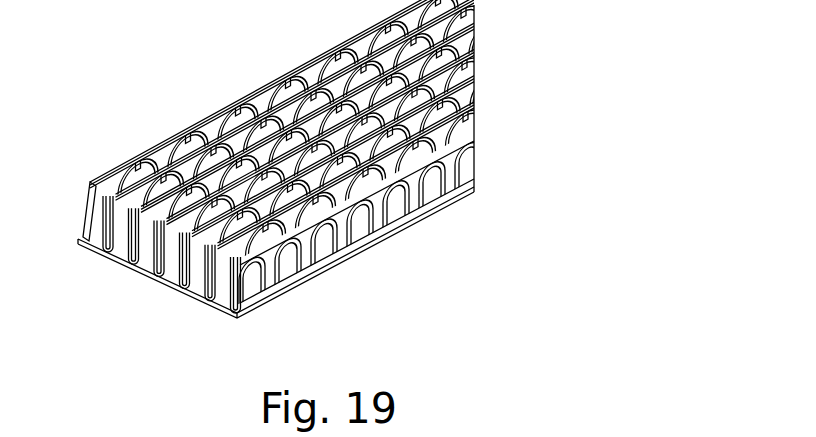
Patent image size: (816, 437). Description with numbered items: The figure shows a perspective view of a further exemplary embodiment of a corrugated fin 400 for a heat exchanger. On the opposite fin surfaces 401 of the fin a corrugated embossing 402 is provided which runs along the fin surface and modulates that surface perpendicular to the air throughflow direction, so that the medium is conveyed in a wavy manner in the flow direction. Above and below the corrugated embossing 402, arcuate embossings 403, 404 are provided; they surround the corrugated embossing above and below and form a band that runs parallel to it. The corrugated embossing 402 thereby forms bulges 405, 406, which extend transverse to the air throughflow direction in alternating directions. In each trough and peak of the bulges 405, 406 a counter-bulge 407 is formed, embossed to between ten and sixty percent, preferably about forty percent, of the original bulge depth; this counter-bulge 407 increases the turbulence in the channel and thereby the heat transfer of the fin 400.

The corrugated fin 400 is at (500, 76).
The fin surfaces 401 is at (232, 306).
The corrugated embossing 402 is at (270, 302).
The arcuate embossing 403 is at (474, 130).
The arcuate embossing 404 is at (432, 200).
The bulge 405 is at (296, 270).
The bulge 406 is at (408, 203).
The counter-bulge 407 is at (478, 152).